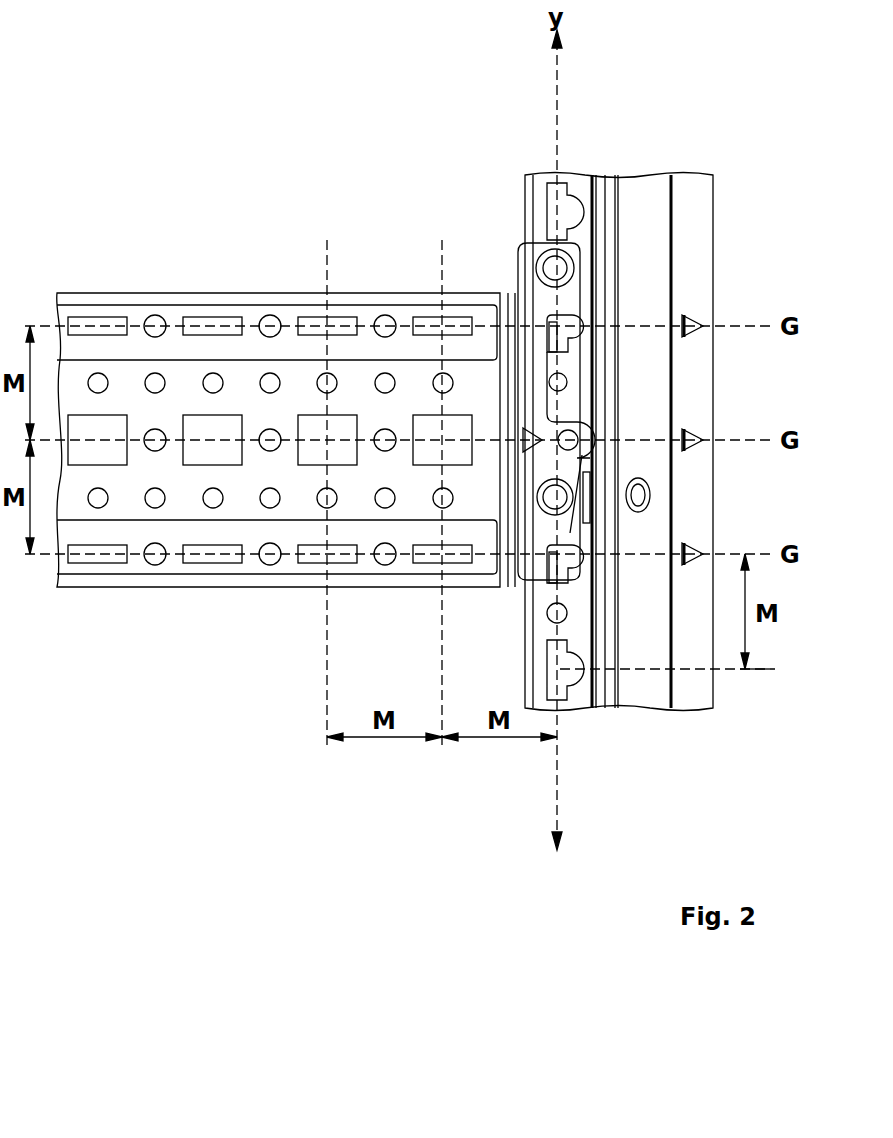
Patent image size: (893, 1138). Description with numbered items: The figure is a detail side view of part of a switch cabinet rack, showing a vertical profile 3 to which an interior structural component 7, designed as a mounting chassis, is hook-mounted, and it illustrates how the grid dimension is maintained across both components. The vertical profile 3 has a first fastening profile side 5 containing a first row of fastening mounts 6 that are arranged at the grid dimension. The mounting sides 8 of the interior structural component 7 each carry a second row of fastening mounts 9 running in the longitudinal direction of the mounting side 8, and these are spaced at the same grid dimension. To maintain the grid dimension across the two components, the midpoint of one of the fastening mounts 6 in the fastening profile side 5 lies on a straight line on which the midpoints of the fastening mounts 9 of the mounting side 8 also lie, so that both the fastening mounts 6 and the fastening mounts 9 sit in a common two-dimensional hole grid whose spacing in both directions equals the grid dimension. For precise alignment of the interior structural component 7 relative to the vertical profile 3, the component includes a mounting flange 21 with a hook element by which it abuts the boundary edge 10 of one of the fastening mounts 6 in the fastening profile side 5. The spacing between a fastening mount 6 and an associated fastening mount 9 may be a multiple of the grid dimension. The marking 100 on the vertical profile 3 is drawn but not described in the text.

The vertical profile 3 is at (693, 223).
The first fastening profile side 5 is at (580, 180).
The fastening mounts 6 is at (575, 326).
The interior structural component 7 is at (122, 278).
The mounting sides 8 is at (251, 315).
The fastening mounts 9 is at (208, 320).
The boundary edge 10 is at (560, 583).
The mounting flange 21 is at (525, 258).
The marking 100 is at (692, 428).